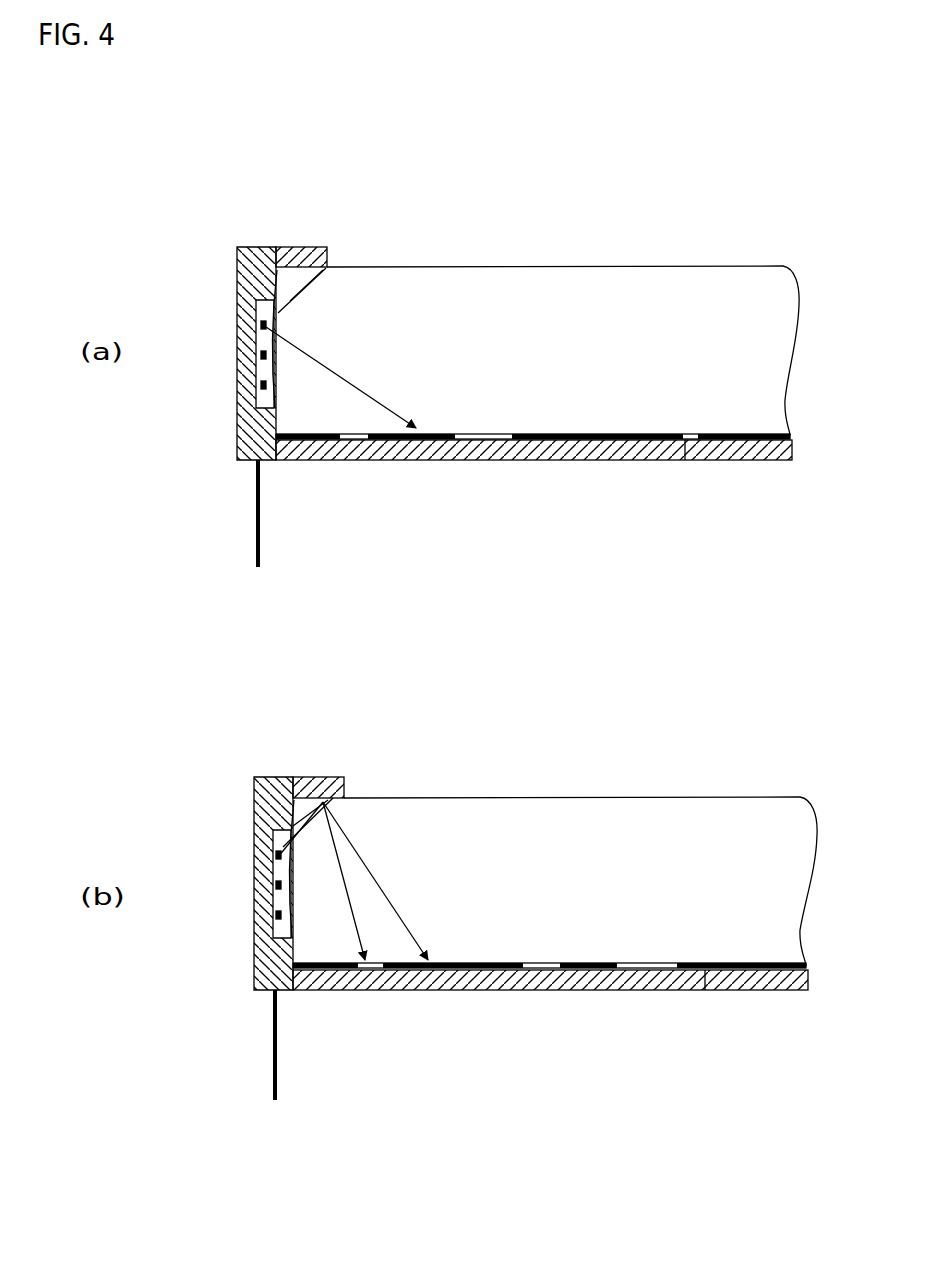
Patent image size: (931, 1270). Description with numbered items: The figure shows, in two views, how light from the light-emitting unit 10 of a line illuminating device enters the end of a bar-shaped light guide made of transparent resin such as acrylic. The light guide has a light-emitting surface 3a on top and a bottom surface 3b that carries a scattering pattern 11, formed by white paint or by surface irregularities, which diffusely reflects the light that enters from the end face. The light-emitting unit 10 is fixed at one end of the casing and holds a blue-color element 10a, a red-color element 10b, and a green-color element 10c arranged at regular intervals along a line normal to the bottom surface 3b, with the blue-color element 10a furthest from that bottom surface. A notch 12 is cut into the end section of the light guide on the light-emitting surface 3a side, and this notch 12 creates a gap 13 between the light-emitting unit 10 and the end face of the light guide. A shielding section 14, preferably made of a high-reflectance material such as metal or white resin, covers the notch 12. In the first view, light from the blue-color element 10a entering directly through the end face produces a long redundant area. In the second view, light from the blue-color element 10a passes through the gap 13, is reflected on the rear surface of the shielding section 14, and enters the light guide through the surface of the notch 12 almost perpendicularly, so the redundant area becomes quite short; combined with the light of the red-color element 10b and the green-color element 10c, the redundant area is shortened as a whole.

The light-emitting surface 3a is at (558, 267).
The bottom surface 3b is at (495, 441).
The light-emitting unit 10 is at (240, 281).
The blue-color element 10a is at (259, 327).
The red-color element 10b is at (259, 359).
The green-color element 10c is at (259, 399).
The scattering pattern 11 is at (688, 460).
The notch 12 is at (297, 282).
The gap 13 is at (252, 247).
The shielding section 14 is at (318, 247).